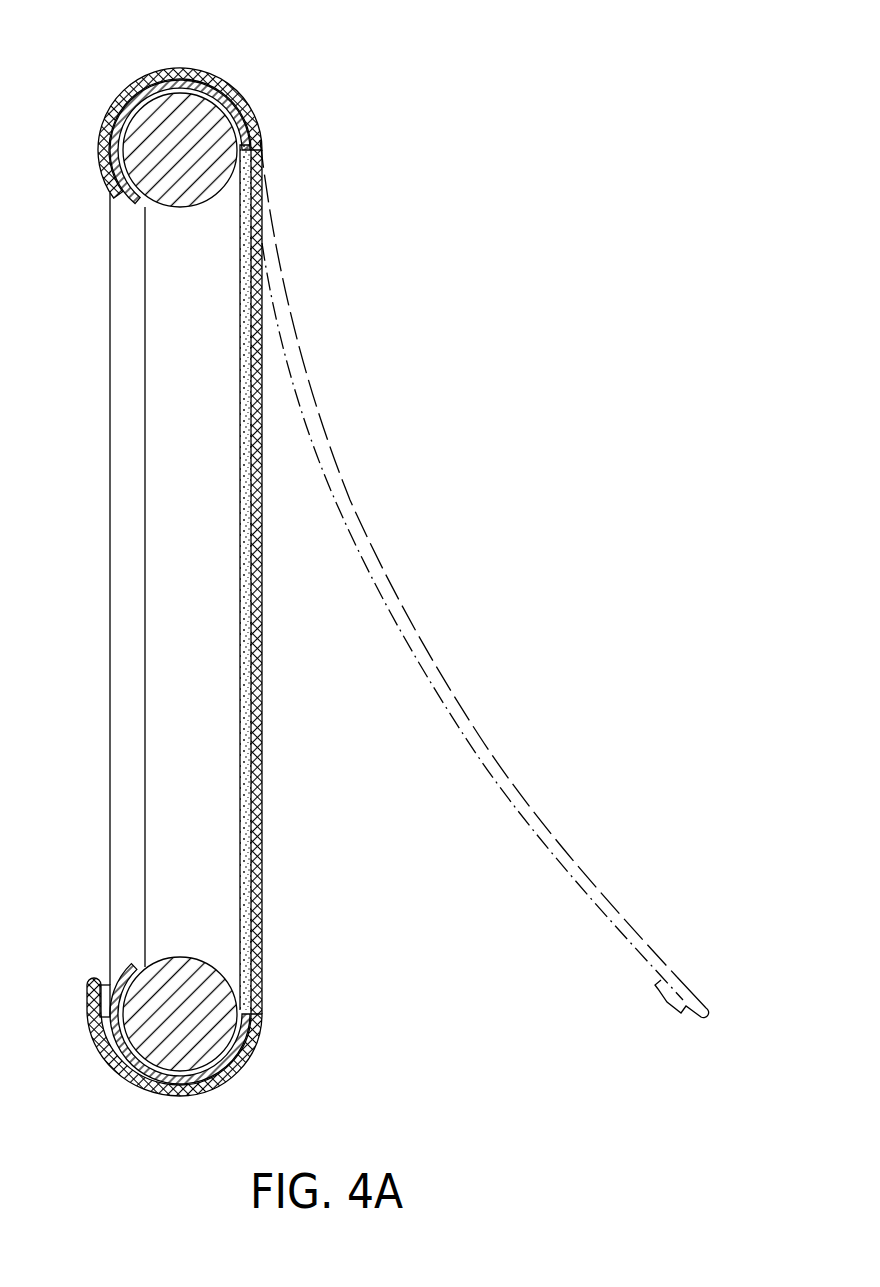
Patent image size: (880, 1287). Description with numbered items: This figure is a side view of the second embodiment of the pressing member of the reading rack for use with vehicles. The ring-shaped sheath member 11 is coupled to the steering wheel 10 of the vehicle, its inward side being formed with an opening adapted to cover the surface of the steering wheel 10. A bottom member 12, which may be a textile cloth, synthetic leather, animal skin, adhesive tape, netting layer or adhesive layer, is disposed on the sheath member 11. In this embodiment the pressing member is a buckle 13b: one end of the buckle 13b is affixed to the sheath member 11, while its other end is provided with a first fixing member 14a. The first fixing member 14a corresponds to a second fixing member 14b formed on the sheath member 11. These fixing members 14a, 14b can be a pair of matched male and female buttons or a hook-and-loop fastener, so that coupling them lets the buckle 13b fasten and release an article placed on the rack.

The steering wheel 10 is at (160, 132).
The sheath member 11 is at (138, 203).
The bottom member 12 is at (243, 473).
The buckle 13b is at (363, 530).
The first fixing member 14a is at (665, 1000).
The second fixing member 14b is at (107, 983).